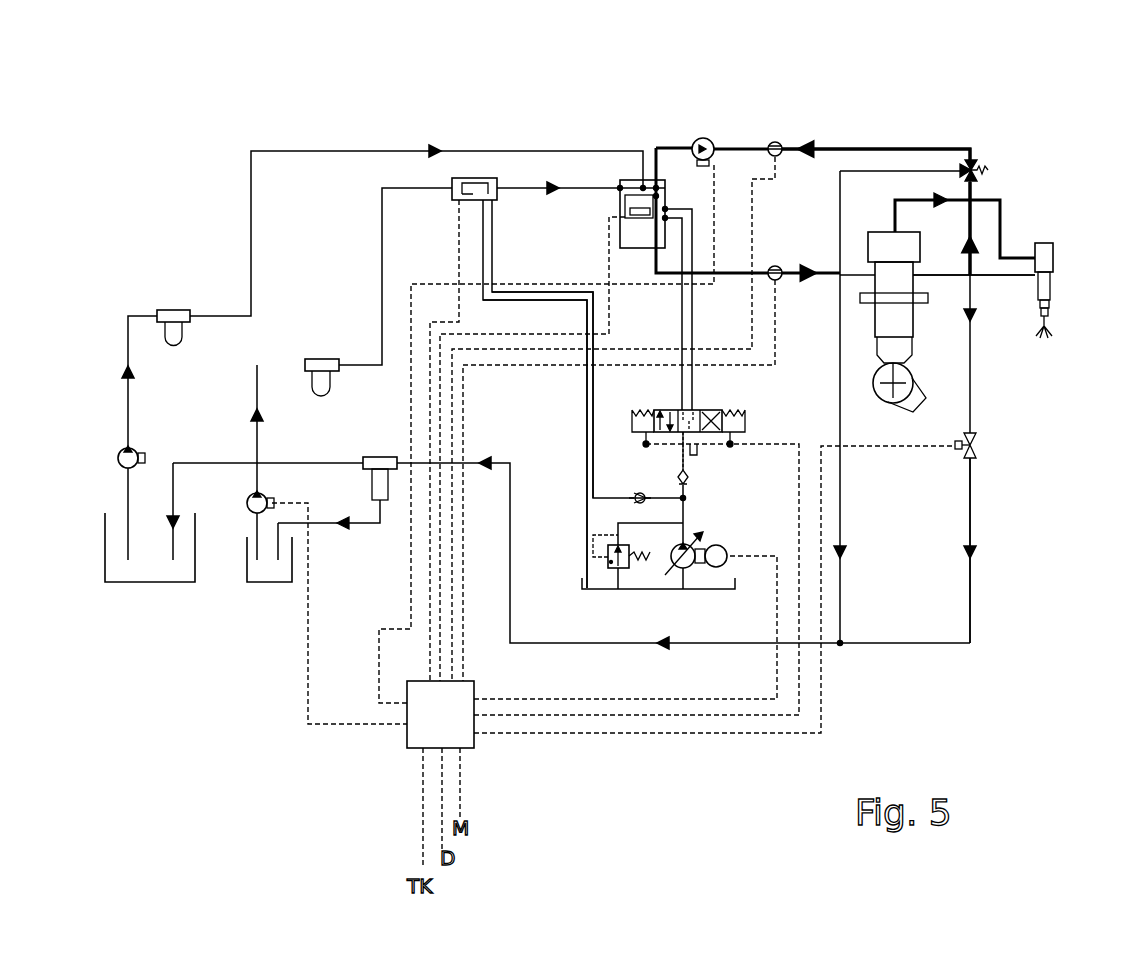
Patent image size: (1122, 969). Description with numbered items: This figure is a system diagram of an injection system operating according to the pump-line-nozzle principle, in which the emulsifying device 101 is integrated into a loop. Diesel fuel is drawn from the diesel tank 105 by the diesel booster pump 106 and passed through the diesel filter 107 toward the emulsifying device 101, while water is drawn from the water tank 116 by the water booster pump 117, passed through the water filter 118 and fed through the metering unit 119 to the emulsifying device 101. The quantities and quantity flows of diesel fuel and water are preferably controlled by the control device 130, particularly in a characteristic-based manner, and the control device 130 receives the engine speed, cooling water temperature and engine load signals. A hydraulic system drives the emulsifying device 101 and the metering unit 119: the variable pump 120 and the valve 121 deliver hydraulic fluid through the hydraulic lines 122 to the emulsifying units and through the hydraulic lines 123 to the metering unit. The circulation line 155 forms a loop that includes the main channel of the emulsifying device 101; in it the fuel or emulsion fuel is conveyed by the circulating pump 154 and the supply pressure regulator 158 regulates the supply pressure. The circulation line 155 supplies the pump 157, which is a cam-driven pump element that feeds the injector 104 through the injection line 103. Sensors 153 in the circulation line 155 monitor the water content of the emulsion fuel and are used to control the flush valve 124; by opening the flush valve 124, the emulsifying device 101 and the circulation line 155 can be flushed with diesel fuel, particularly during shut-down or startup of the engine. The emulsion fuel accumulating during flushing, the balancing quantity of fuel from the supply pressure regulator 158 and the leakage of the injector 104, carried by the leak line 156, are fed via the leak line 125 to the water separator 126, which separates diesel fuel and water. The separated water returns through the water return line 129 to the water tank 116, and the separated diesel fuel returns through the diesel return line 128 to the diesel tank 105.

The emulsifying device 101 is at (630, 178).
The injection line 103 is at (1003, 218).
The injector 104 is at (1052, 250).
The diesel tank 105 is at (145, 568).
The diesel booster pump 106 is at (122, 452).
The diesel filter 107 is at (170, 315).
The water tank 116 is at (285, 570).
The water booster pump 117 is at (263, 510).
The water filter 118 is at (320, 362).
The metering unit (water) 119 is at (462, 178).
The variable pump 120 is at (700, 547).
The valve 121 is at (690, 425).
The hydraulic system (emulsifying units) 122 is at (682, 357).
The hydraulic system (metering unit) 123 is at (586, 497).
The flush valve 124 is at (975, 443).
The leak line 125 is at (972, 522).
The water separator 126 is at (380, 460).
The diesel return line 128 is at (200, 460).
The water return line 129 is at (378, 525).
The control device 130 is at (433, 722).
The sensors 153 is at (778, 268).
The circulating pump 154 is at (710, 138).
The circulation line 155 is at (903, 148).
The leak line 156 is at (995, 278).
The pump 157 is at (880, 243).
The supply pressure regulator 158 is at (978, 165).